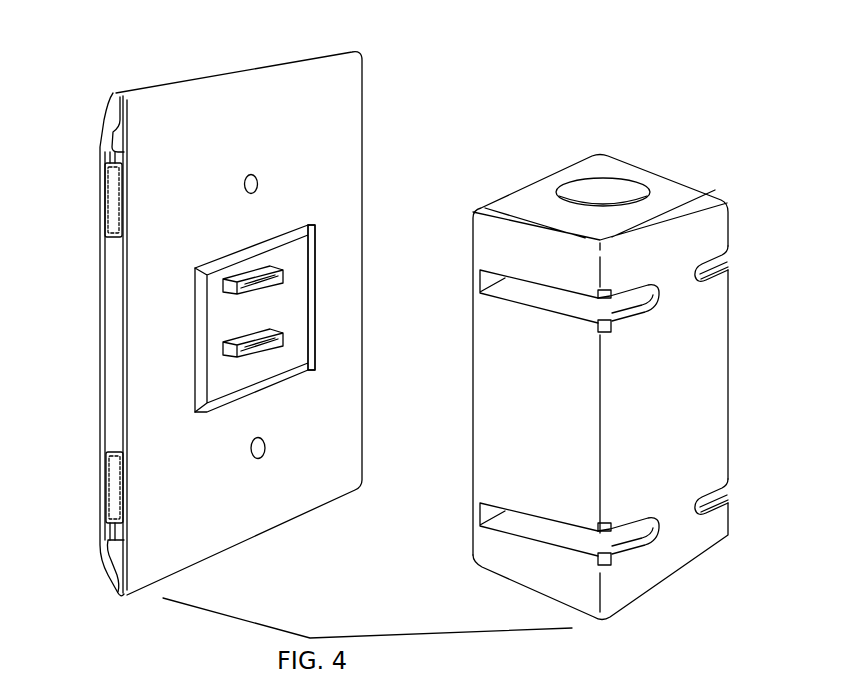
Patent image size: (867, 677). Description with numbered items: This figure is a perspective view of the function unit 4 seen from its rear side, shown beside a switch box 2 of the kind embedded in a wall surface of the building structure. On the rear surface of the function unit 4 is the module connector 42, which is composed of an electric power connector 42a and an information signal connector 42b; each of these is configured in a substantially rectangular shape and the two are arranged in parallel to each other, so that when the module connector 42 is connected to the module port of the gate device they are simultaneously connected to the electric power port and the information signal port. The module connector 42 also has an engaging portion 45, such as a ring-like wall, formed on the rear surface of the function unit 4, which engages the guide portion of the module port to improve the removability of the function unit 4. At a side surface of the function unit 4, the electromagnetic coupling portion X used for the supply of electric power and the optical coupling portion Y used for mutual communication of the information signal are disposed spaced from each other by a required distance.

The switch box 2 is at (703, 377).
The function unit 4 is at (329, 137).
The module connector 42 is at (315, 248).
The electric power connector 42a is at (280, 285).
The information signal connector 42b is at (263, 343).
The engaging portion 45 is at (311, 318).
The electromagnetic coupling portion X is at (115, 208).
The optical coupling portion Y is at (113, 485).